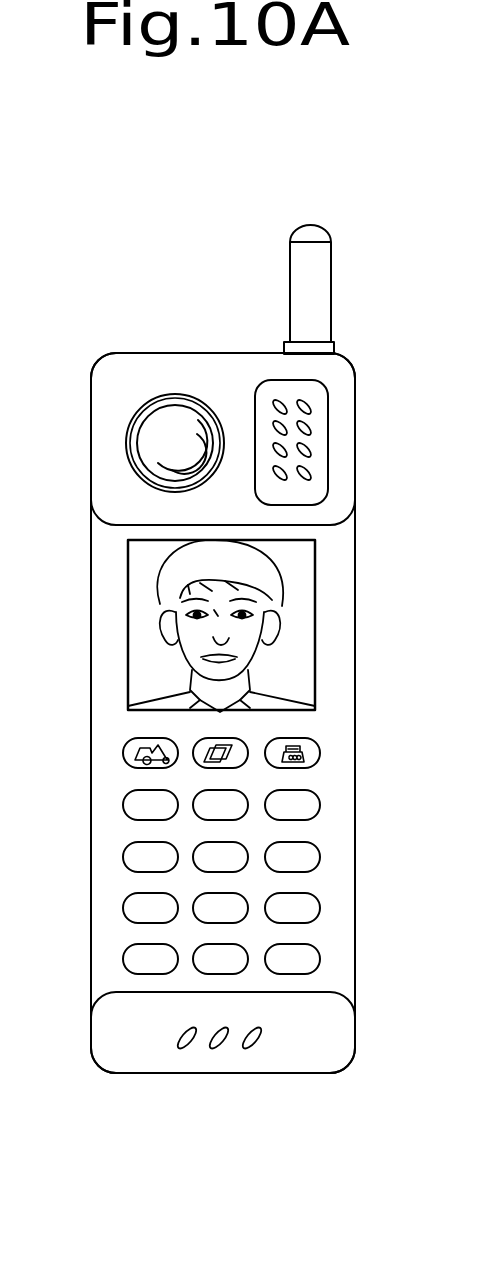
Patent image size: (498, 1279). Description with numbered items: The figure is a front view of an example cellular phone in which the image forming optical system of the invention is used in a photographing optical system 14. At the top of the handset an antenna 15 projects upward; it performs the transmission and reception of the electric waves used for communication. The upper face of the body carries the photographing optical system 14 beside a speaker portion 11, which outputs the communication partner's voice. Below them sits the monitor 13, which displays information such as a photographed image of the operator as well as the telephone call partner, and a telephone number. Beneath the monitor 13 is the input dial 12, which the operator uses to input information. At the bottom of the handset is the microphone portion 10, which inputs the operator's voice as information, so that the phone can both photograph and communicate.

The microphone portion 10 is at (300, 1048).
The speaker portion 11 is at (268, 390).
The input dial 12 is at (128, 867).
The monitor 13 is at (300, 587).
The photographing optical system 14 is at (143, 451).
The antenna 15 is at (303, 268).